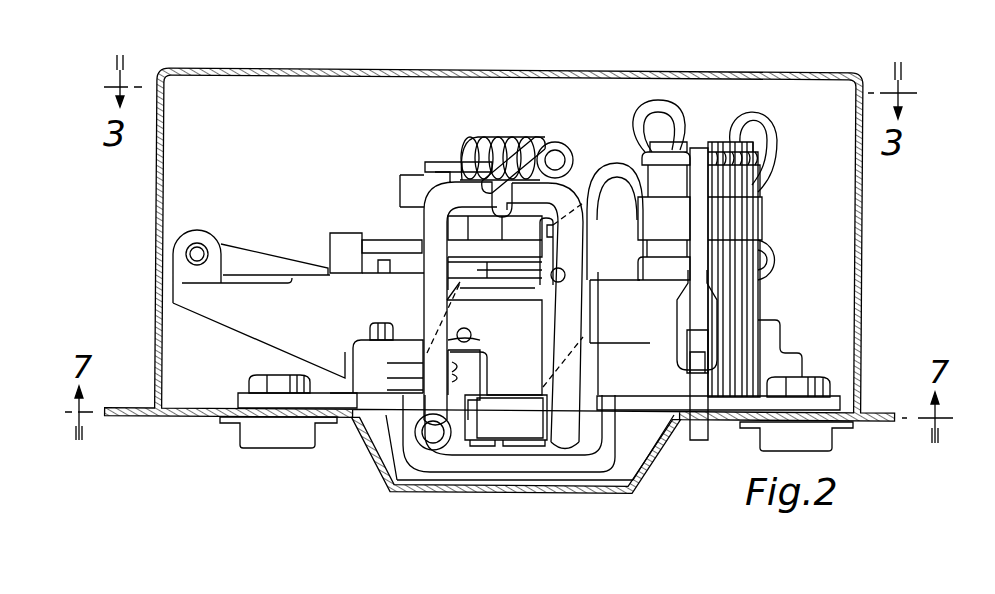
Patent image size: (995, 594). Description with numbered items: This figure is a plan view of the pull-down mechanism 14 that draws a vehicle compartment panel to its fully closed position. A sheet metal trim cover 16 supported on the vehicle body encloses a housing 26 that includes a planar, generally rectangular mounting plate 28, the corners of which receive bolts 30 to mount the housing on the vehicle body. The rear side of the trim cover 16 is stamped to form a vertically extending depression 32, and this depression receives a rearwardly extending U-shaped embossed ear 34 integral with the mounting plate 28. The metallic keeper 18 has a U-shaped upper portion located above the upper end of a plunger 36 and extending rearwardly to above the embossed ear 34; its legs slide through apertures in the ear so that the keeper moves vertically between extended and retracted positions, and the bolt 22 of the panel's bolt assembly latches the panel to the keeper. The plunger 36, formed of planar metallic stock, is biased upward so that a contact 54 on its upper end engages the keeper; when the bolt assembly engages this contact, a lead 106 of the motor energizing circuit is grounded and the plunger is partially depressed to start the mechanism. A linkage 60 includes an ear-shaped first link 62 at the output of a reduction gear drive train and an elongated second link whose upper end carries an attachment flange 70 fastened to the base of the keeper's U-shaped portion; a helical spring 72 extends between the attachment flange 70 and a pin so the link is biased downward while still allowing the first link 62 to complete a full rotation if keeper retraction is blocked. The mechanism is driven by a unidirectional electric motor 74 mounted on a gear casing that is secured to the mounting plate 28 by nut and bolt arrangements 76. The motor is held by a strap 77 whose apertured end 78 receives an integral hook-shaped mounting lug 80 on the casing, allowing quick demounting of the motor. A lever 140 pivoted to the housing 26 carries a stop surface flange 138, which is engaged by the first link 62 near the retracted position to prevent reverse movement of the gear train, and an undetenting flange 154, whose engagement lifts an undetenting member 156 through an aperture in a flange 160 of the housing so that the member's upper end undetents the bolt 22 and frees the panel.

The pull-down mechanism 14 is at (838, 211).
The sheet metal trim cover 16 is at (325, 68).
The keeper 18 is at (410, 215).
The bolt 22 is at (640, 235).
The housing 26 is at (363, 437).
The mounting plate 28 is at (305, 422).
The bolts 30 is at (279, 378).
The depression 32 is at (510, 491).
The U-shaped embossed ear 34 is at (620, 440).
The plunger 36 is at (553, 445).
The contact 54 is at (384, 341).
The linkage 60 is at (431, 157).
The first link 62 is at (486, 241).
The attachment flange 70 is at (490, 150).
The helical spring 72 is at (541, 144).
The electric motor 74 is at (657, 160).
The nut and bolt arrangements 76 is at (375, 340).
The strap 77 is at (696, 172).
The apertured end 78 is at (698, 312).
The hook-shaped mounting lug 80 is at (700, 369).
The lead 106 is at (610, 165).
The stop surface flange 138 is at (395, 238).
The lever 140 is at (330, 250).
The undetenting flange 154 is at (345, 236).
The undetenting member 156 is at (198, 243).
The flange 160 is at (210, 237).